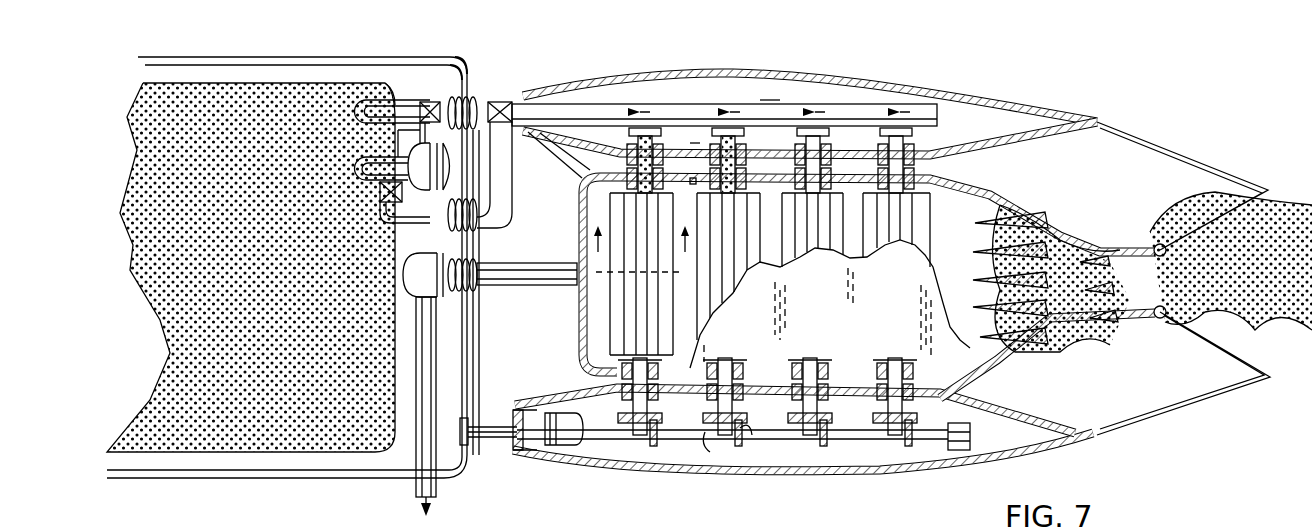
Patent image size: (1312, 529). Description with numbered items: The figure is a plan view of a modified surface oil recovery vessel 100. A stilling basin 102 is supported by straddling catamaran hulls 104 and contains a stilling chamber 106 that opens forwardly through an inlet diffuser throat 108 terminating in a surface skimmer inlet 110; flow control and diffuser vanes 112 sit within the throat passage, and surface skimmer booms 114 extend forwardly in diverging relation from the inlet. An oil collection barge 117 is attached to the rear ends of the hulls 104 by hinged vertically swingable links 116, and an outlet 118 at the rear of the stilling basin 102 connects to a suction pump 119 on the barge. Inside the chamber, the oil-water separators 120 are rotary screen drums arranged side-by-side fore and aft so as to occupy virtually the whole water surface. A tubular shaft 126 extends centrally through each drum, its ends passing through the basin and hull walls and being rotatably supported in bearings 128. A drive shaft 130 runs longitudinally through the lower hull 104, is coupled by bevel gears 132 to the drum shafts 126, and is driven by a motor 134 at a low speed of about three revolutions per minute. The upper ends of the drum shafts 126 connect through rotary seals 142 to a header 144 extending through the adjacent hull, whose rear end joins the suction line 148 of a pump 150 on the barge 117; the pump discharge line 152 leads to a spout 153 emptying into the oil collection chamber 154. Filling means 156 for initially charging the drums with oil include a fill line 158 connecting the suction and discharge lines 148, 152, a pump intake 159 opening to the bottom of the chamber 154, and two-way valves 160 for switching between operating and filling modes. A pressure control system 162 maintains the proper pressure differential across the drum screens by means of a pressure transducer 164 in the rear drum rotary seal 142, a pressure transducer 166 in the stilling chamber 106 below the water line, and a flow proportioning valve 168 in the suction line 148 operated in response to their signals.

The oil recovery vessel 100 is at (1158, 96).
The stilling basin 102 is at (992, 192).
The catamaran hulls 104 is at (900, 84).
The stilling chamber 106 is at (690, 358).
The inlet diffuser throat 108 is at (1086, 246).
The surface skimmer inlet 110 is at (1165, 320).
The flow control and diffuser vanes 112 is at (1050, 318).
The surface skimmer booms 114 is at (1236, 195).
The hinged vertically swingable links 116 is at (467, 440).
The oil collection barge 117 is at (246, 442).
The outlet 118 is at (505, 262).
The suction pump 119 is at (402, 268).
The oil-water separators 120 is at (735, 305).
The tubular shaft 126 is at (636, 405).
The bearings 128 is at (680, 140).
The drive shaft 130 is at (805, 440).
The bevel gears 132 is at (740, 435).
The motor 134 is at (545, 450).
The rotary seals 142 is at (600, 120).
The header 144 is at (770, 100).
The suction line 148 is at (378, 226).
The pump 150 is at (408, 150).
The discharge line 152 is at (397, 131).
The spout 153 is at (352, 104).
The oil collection chamber 154 is at (345, 452).
The filling means 156 is at (469, 66).
The fill line 158 is at (464, 68).
The pump intake 159 is at (352, 169).
The two-way valves 160 is at (384, 92).
The pressure control system 162 is at (376, 192).
The pressure transducer 164 is at (640, 135).
The pressure transducer 166 is at (705, 140).
The flow proportioning valve 168 is at (385, 204).